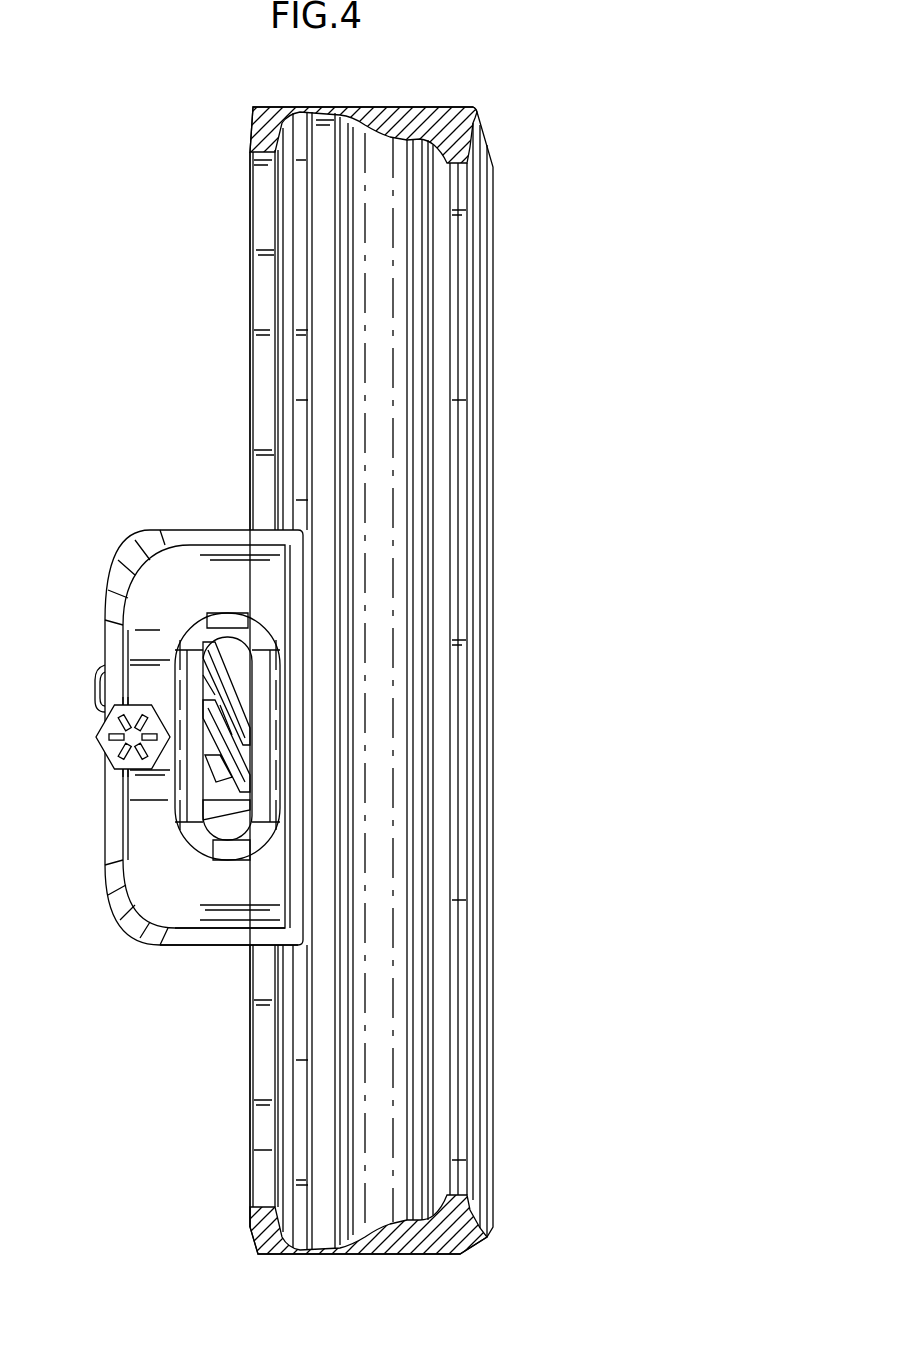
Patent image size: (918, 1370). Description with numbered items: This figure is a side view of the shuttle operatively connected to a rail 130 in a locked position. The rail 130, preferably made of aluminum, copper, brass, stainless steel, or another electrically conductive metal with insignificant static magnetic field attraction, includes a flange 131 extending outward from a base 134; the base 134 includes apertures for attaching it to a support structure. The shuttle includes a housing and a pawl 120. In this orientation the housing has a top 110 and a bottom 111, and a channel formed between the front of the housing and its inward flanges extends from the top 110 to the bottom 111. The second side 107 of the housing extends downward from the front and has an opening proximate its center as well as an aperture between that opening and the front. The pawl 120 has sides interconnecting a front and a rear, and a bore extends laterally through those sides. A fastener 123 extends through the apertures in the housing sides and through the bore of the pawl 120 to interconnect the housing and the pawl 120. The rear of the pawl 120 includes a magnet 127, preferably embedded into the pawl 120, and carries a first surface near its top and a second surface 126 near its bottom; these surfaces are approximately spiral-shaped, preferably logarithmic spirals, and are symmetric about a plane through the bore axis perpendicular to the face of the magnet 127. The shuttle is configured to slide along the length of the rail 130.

The second side 107 is at (245, 902).
The top 110 is at (190, 529).
The bottom 111 is at (192, 948).
The pawl 120 is at (98, 690).
The fastener 123 is at (118, 748).
The second surface 126 is at (248, 760).
The magnet 127 is at (233, 680).
The rail 130 is at (389, 666).
The flange 131 is at (260, 262).
The base 134 is at (383, 148).